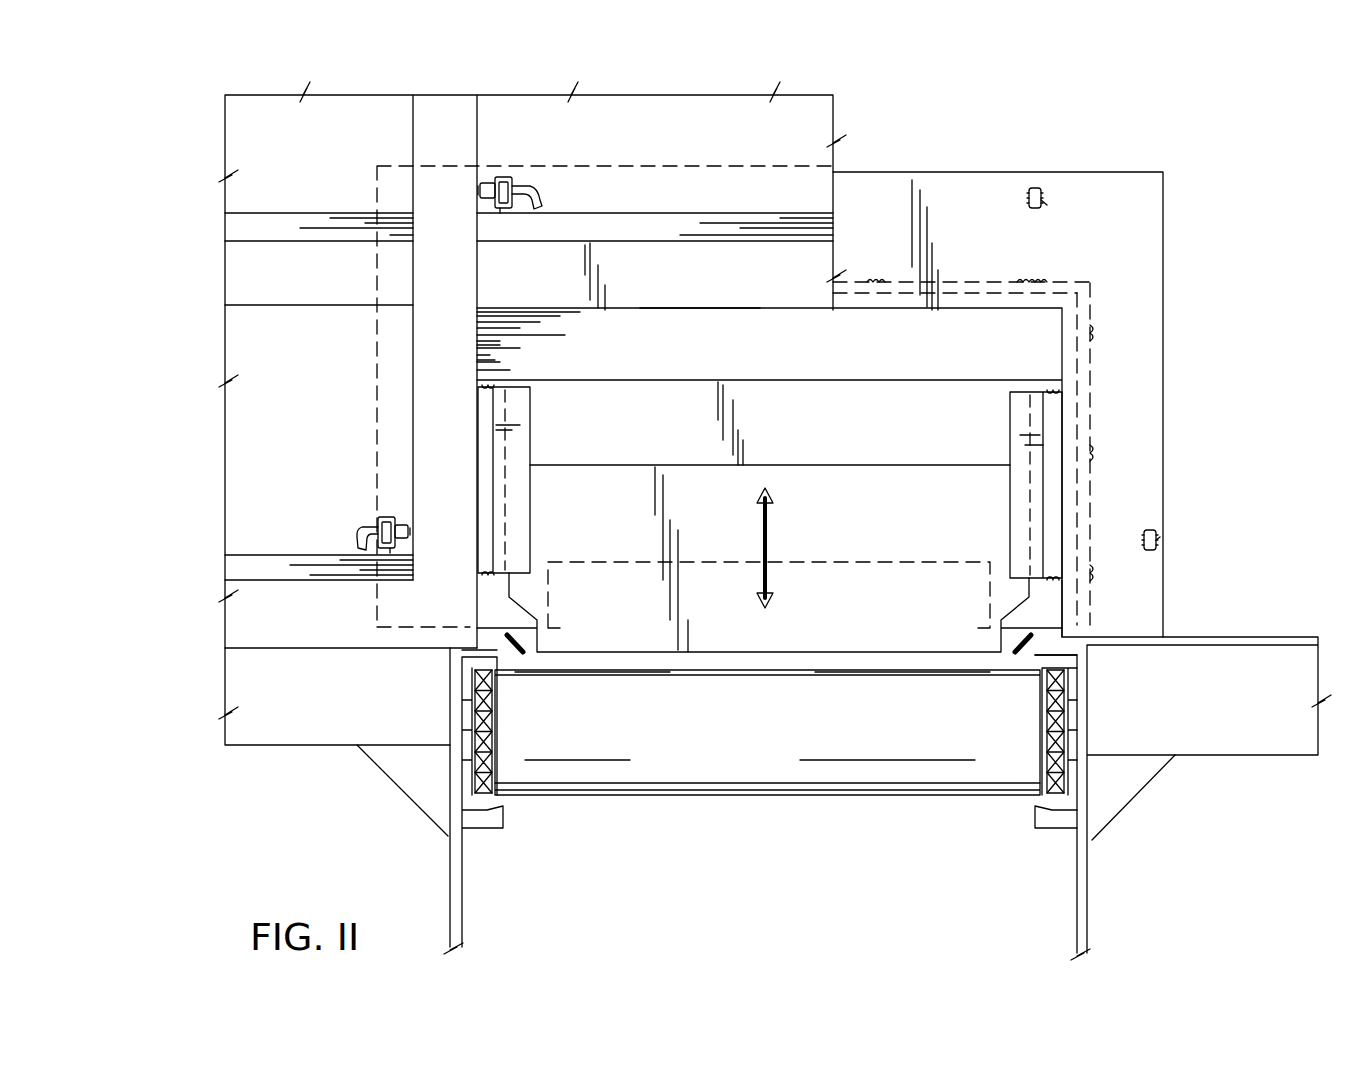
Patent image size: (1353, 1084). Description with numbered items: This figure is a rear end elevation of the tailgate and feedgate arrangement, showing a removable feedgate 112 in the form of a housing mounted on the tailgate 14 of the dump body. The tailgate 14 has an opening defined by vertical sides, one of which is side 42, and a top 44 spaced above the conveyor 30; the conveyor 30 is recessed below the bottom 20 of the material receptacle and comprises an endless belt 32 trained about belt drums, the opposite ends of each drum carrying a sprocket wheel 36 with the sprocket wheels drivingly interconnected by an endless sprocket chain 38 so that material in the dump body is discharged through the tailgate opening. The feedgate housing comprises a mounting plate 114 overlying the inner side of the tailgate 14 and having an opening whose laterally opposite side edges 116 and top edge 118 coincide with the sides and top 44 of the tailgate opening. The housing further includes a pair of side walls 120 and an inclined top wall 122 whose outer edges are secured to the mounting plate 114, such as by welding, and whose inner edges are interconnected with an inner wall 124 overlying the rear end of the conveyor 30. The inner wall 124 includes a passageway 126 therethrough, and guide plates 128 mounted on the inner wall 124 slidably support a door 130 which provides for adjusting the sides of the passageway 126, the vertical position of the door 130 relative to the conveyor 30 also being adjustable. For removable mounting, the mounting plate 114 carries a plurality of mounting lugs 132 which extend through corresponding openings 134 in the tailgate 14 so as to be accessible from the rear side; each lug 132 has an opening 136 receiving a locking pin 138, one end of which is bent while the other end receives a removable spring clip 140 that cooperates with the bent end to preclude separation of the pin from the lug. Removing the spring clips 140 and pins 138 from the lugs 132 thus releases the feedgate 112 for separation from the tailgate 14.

The tailgate 14 is at (224, 430).
The bottom 20 is at (1267, 637).
The conveyor 30 is at (760, 800).
The endless belt 32 is at (877, 773).
The sprocket wheel 36 is at (476, 768).
The endless sprocket chain 38 is at (473, 790).
The vertical side 42 is at (477, 362).
The top 44 is at (697, 308).
The feedgate 112 is at (1187, 362).
The mounting plate 114 is at (1148, 195).
The side edge 116 is at (480, 323).
The top edge 118 is at (917, 313).
The side wall 120 is at (1085, 483).
The inclined top wall 122 is at (958, 333).
The inner wall 124 is at (763, 403).
The passageway 126 is at (902, 566).
The guide plate 128 is at (531, 429).
The door 130 is at (812, 483).
The mounting lug 132 is at (505, 178).
The opening 134 is at (503, 208).
The opening 136 is at (1047, 205).
The locking pin 138 is at (537, 188).
The spring clip 140 is at (490, 182).